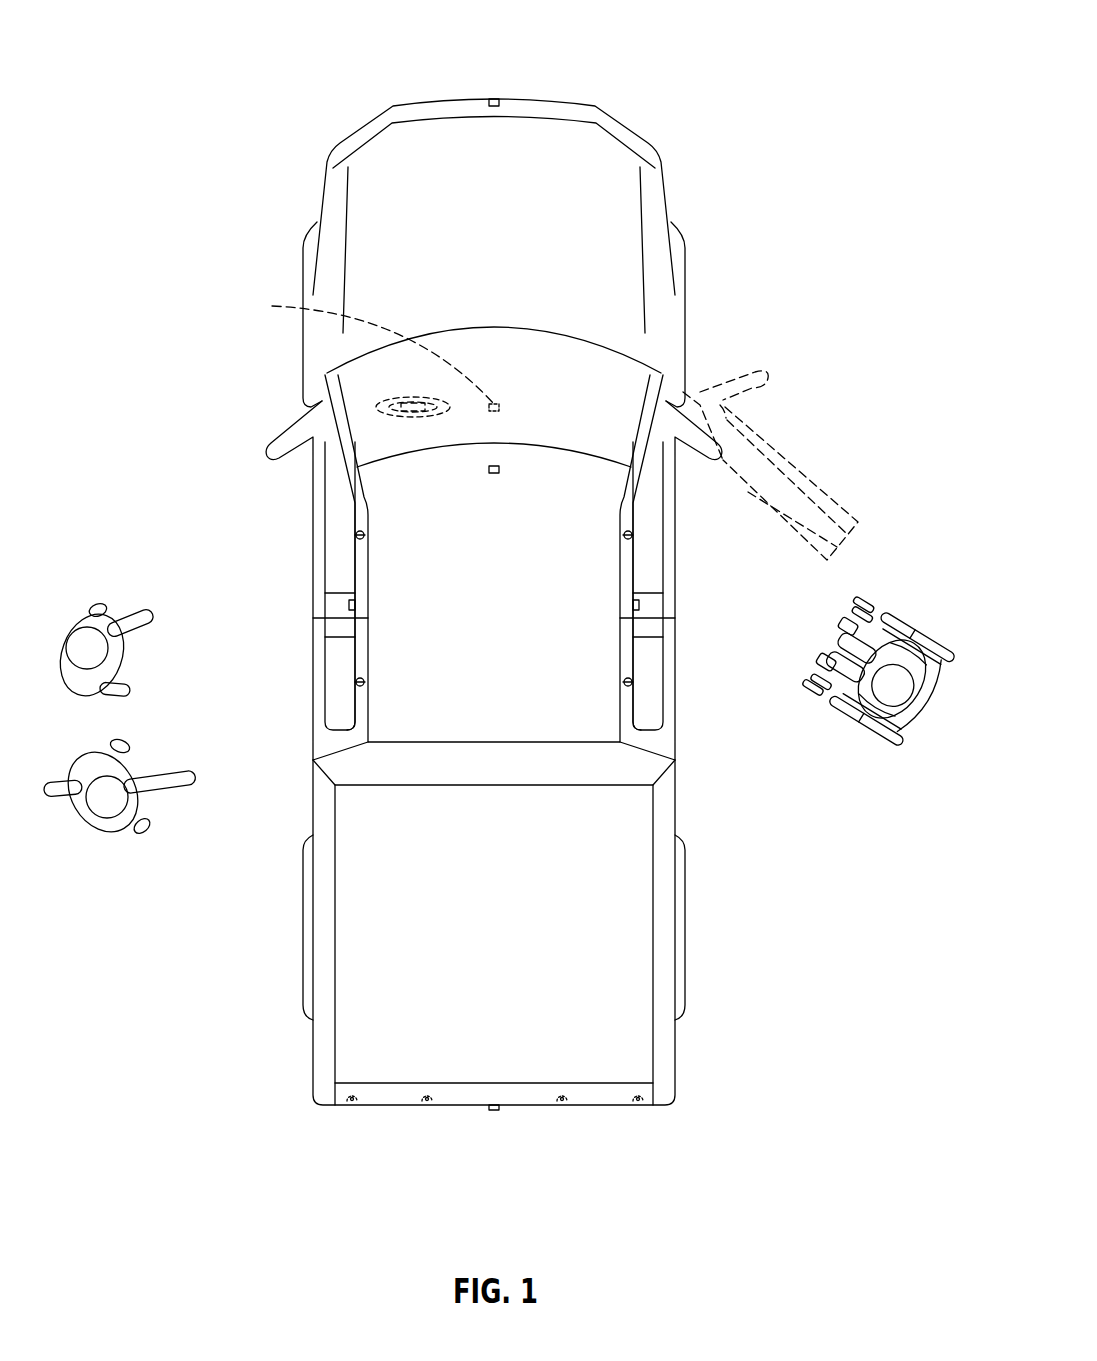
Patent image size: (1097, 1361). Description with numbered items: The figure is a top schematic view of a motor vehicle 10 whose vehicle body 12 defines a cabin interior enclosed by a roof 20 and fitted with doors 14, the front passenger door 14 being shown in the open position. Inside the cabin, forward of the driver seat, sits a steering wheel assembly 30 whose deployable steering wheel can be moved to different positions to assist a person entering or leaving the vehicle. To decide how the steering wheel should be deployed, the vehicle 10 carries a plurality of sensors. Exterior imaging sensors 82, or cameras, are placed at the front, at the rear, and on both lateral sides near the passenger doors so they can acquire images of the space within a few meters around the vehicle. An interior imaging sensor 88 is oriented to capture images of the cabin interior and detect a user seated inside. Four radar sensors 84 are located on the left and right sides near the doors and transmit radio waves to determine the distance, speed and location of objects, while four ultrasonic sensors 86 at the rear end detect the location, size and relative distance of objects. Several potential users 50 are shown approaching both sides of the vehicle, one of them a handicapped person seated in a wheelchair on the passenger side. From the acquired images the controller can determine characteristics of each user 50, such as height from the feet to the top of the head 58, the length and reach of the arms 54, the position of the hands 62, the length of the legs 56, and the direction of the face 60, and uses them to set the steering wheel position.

The motor vehicle 10 is at (605, 559).
The vehicle body 12 is at (652, 230).
The door 14 is at (320, 485).
The roof 20 is at (537, 697).
The steering wheel assembly 30 is at (392, 393).
The user 50 is at (70, 610).
The arms 54 is at (898, 633).
The legs 56 is at (860, 638).
The head 58 is at (905, 690).
The face 60 is at (867, 677).
The hands 62 is at (878, 618).
The exterior imaging sensor 82 is at (498, 99).
The radar sensor 84 is at (357, 535).
The ultrasonic sensor 86 is at (427, 1108).
The interior imaging sensor 88 is at (367, 349).